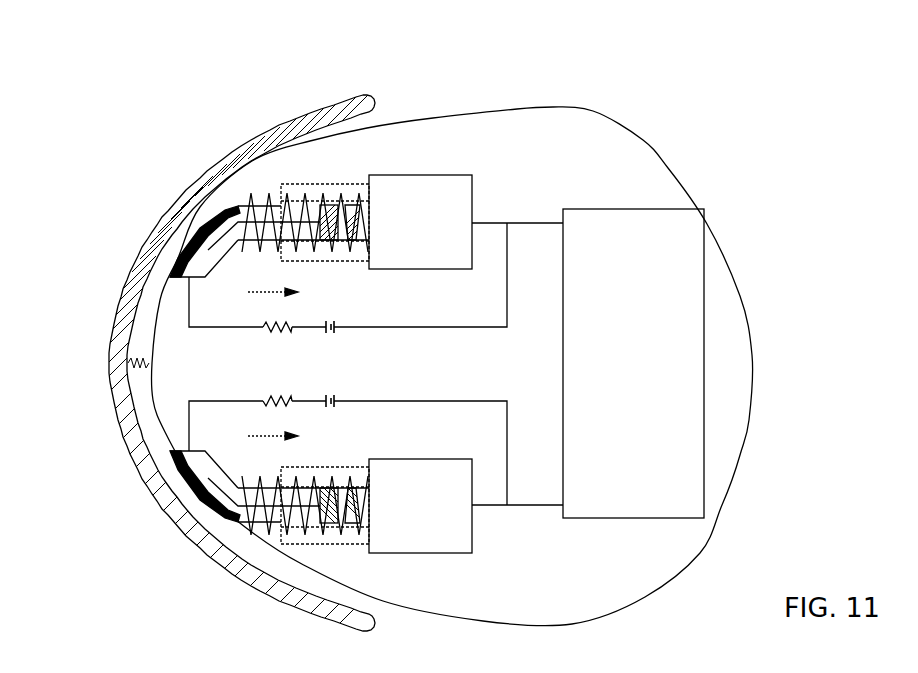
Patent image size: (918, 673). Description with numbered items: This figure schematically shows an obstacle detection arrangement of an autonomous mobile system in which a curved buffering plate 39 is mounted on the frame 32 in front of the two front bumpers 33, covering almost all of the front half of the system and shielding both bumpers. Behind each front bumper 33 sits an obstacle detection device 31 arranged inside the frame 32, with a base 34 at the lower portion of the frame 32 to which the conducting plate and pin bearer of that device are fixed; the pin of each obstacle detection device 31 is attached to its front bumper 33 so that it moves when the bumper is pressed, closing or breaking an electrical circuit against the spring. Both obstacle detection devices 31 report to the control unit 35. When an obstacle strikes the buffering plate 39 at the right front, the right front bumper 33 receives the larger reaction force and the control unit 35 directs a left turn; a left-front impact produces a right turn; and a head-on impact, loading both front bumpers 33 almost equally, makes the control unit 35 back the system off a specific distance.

The obstacle detection device 31 is at (256, 250).
The frame 32 is at (757, 390).
The front bumper 33 is at (227, 205).
The base 34 is at (425, 175).
The control unit 35 is at (704, 296).
The buffering plate 39 is at (135, 268).